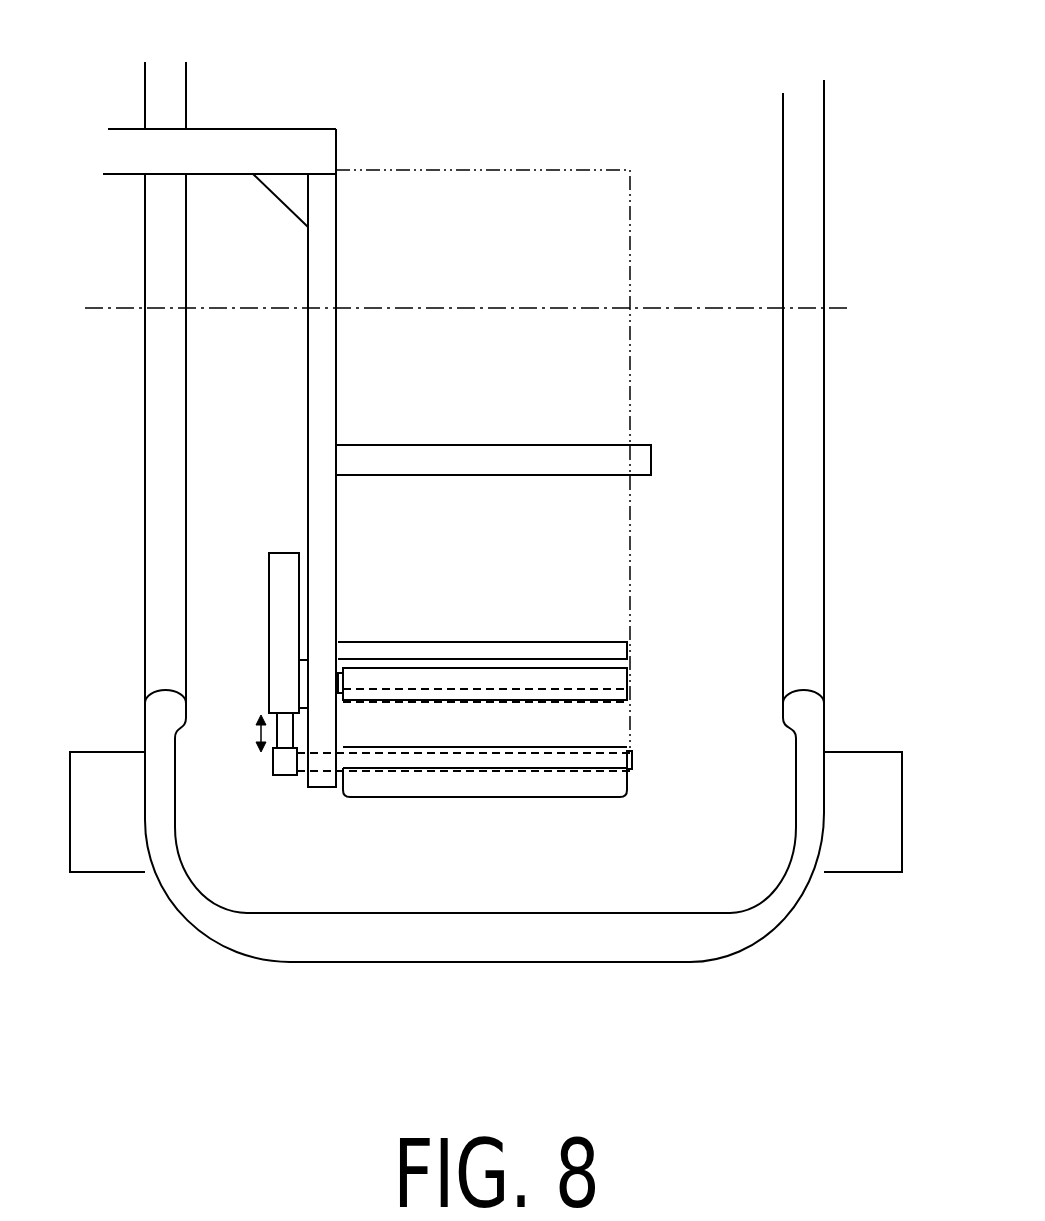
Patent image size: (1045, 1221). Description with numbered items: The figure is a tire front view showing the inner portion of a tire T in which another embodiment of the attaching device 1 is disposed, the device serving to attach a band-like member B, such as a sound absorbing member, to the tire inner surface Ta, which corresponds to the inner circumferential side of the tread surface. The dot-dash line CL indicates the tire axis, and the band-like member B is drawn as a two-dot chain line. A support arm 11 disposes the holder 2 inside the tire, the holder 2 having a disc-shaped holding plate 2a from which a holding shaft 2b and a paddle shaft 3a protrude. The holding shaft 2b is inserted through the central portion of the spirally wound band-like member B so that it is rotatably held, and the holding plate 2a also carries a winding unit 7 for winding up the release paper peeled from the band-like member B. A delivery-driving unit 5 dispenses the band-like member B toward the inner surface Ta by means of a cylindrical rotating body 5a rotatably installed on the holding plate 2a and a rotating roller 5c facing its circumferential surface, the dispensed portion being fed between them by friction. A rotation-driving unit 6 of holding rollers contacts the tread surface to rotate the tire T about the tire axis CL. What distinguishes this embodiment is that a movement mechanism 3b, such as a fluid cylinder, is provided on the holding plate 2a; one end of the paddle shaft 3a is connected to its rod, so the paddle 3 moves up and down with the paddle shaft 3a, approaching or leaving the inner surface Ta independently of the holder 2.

The attaching device 1 is at (486, 540).
The holder 2 is at (441, 480).
The holding plate 2a is at (317, 412).
The holding shaft 2b is at (485, 455).
The paddle 3 is at (495, 794).
The paddle shaft 3a is at (632, 760).
The movement mechanism 3b is at (275, 553).
The delivery-driving unit 5 is at (510, 655).
The rotating body 5a is at (482, 673).
The rotating roller 5c is at (478, 643).
The rotation-driving unit 6 is at (853, 770).
The winding unit 7 is at (583, 702).
The support arm 11 is at (236, 143).
The band-like member B is at (540, 180).
The tire axis CL is at (488, 308).
The tire T is at (447, 557).
The tire inner surface Ta is at (370, 915).